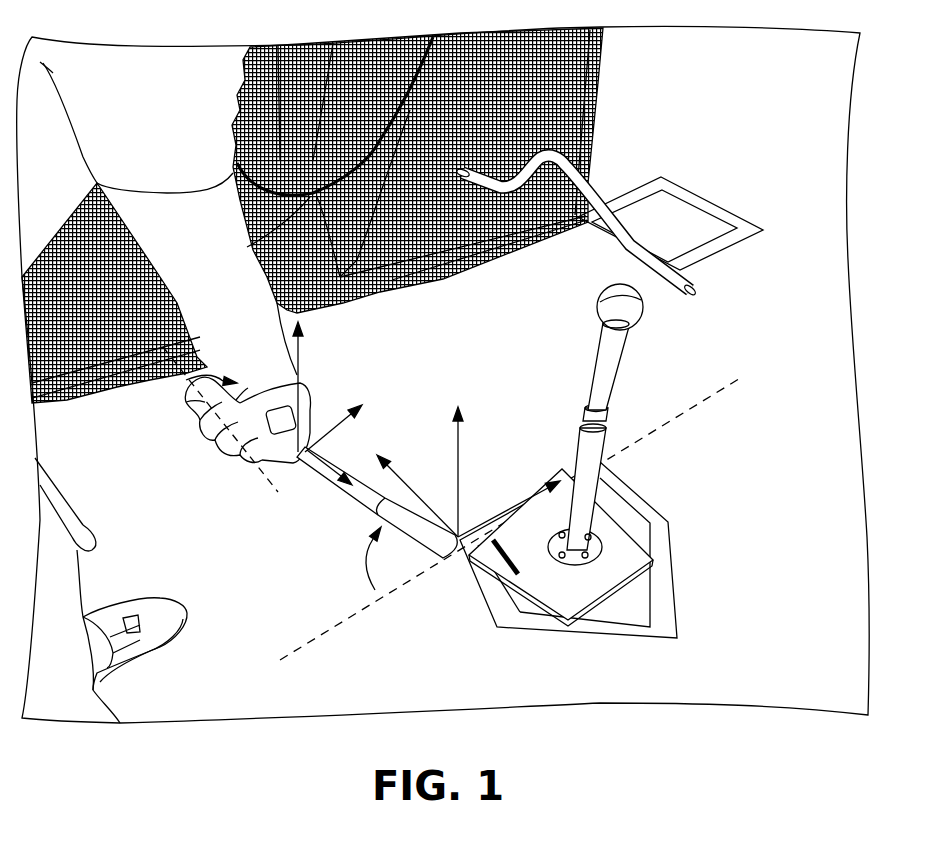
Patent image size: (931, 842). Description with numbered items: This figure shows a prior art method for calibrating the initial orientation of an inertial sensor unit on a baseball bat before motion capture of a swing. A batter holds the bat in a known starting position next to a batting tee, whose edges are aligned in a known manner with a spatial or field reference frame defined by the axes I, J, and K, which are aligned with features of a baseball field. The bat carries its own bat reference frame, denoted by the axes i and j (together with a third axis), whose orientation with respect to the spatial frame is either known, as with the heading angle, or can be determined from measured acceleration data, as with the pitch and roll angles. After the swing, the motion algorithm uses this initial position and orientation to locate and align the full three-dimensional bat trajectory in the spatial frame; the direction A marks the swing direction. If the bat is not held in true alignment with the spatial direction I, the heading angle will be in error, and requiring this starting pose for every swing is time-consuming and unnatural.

The spatial reference frame axis K is at (465, 461).
The spatial reference frame axis J is at (417, 484).
The spatial reference frame axis I is at (509, 497).
The bat swing direction A is at (333, 416).
The bat reference frame axis i is at (329, 464).
The bat reference frame axis j is at (289, 386).